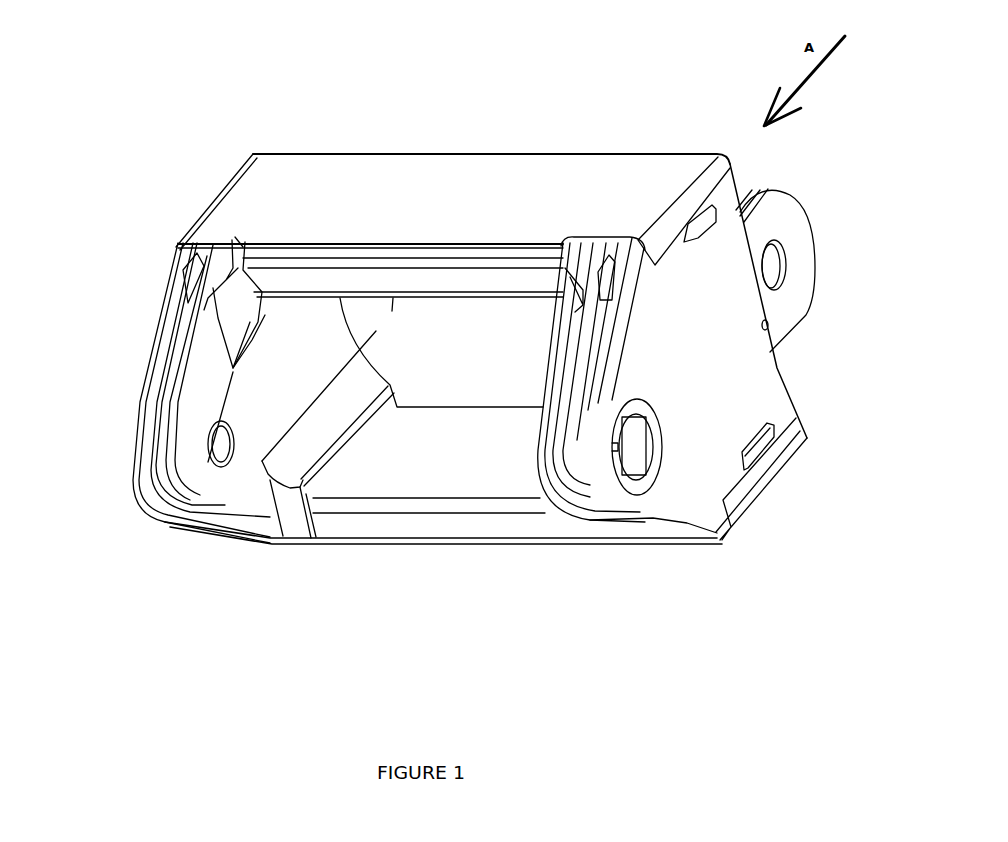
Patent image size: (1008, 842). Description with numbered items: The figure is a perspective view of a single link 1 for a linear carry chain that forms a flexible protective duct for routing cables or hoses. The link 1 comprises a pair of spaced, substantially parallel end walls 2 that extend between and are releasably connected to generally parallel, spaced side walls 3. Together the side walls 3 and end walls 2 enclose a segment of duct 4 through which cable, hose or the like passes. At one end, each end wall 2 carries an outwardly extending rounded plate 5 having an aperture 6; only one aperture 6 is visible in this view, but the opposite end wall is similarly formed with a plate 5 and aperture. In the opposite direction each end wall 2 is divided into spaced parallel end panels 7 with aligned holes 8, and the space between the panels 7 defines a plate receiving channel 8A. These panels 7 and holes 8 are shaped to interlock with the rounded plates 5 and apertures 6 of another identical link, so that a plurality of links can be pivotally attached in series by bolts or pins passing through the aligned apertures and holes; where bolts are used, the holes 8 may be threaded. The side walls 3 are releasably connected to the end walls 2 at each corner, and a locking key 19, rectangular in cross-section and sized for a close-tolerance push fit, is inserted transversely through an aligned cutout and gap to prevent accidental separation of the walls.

The link 1 is at (293, 120).
The end wall 2 is at (760, 400).
The side wall 3 is at (370, 157).
The duct 4 is at (477, 368).
The rounded plate 5 is at (368, 318).
The aperture 6 is at (773, 266).
The end panel 7 is at (205, 477).
The hole 8 is at (220, 442).
The plate receiving channel 8A is at (173, 355).
The locking key 19 is at (683, 249).